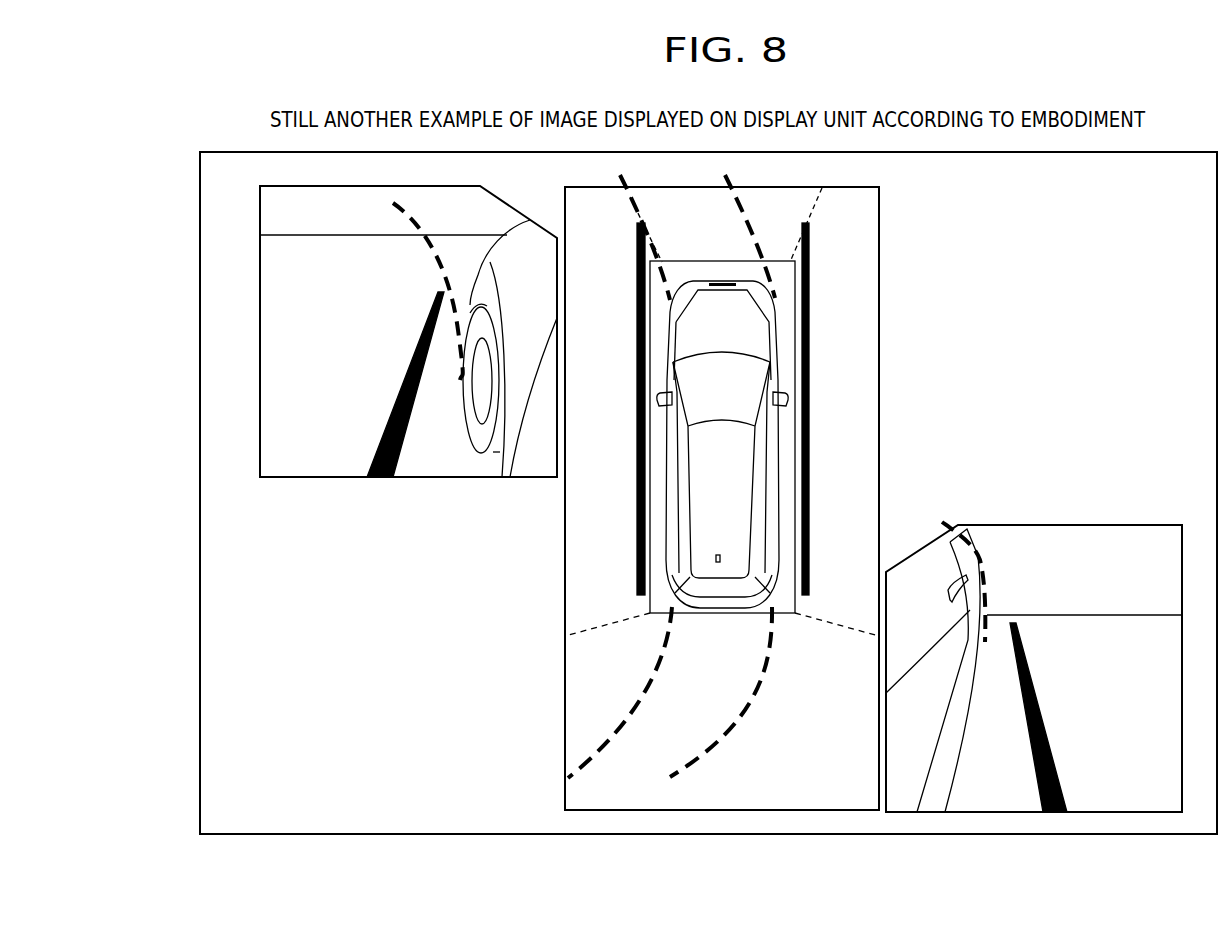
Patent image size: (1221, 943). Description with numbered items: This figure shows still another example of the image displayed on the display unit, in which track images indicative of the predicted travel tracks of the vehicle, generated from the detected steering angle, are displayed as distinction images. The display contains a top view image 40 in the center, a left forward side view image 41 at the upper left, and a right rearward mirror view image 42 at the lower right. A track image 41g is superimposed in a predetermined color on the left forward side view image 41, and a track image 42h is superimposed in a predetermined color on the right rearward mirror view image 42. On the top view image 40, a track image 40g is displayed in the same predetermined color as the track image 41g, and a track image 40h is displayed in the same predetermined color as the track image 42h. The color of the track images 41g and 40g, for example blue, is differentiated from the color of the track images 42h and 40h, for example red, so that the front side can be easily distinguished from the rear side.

The top view image 40 is at (880, 255).
The track image 40g is at (641, 214).
The track image 40h is at (723, 730).
The left forward side view image 41 is at (310, 480).
The track image 41g is at (435, 260).
The right rearward mirror view image 42 is at (1077, 525).
The track image 42h is at (990, 588).